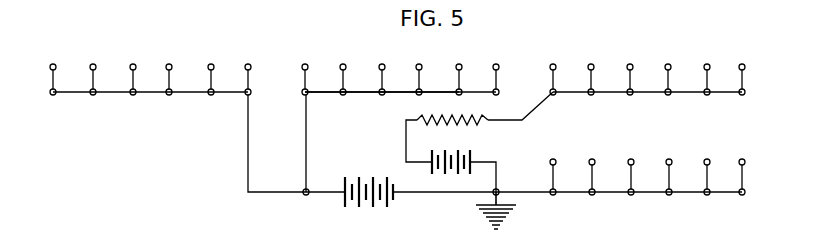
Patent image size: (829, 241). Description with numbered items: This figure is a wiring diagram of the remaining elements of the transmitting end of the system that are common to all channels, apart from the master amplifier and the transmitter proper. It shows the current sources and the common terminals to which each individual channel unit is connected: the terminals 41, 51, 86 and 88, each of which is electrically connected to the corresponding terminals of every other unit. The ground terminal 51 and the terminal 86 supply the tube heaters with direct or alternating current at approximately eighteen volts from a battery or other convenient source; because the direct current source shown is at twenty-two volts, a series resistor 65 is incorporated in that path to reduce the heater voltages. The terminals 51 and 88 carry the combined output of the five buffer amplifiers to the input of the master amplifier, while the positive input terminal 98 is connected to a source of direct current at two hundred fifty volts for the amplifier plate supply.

The terminal 88 is at (248, 64).
The terminal 41 is at (459, 64).
The positive input terminal 98 is at (498, 64).
The terminal 86 is at (742, 64).
The ground terminal 51 is at (553, 159).
The series resistor 65 is at (448, 117).